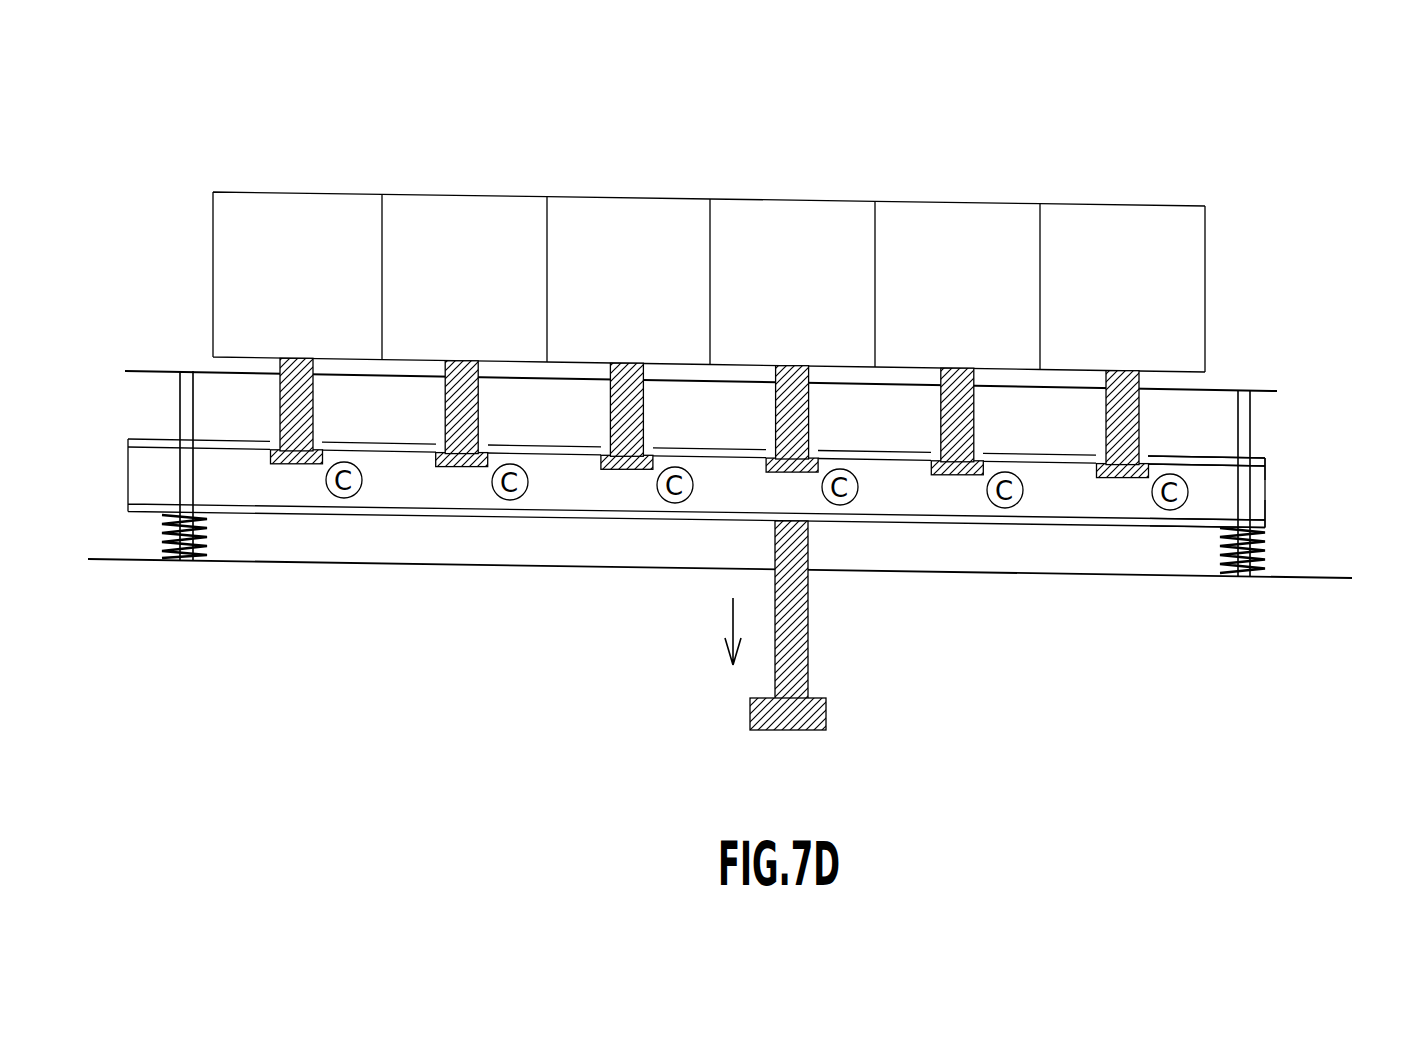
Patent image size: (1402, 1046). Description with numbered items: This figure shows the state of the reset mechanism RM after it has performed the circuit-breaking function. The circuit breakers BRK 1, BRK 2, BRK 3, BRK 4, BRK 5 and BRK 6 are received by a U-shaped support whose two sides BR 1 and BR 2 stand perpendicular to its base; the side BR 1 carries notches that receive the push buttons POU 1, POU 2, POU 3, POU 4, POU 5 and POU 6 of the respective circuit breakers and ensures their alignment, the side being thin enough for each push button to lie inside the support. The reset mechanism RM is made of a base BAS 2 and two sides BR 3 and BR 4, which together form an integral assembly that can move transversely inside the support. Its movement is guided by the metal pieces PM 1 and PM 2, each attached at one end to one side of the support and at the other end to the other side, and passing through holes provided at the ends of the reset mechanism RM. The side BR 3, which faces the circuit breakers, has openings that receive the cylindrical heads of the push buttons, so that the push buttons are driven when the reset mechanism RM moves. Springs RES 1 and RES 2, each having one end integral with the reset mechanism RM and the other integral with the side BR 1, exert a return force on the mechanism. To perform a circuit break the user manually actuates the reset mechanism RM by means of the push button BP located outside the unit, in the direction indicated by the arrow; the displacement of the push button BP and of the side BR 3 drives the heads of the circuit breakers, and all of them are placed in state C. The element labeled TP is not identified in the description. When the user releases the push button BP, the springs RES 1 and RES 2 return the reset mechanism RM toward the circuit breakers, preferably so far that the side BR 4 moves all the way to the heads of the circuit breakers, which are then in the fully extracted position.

The push button POU 1 is at (280, 358).
The push button POU 2 is at (475, 360).
The push button POU 3 is at (640, 368).
The push button POU 4 is at (795, 367).
The push button POU 5 is at (957, 370).
The push button POU 6 is at (1130, 372).
The circuit breaker BRK 1 is at (313, 232).
The circuit breaker BRK 2 is at (467, 232).
The circuit breaker BRK 3 is at (633, 238).
The circuit breaker BRK 4 is at (798, 238).
The circuit breaker BRK 5 is at (955, 232).
The circuit breaker BRK 6 is at (1117, 232).
The reset mechanism RM is at (1182, 468).
The side of the support BR 1 is at (1228, 388).
The side of the support BR 2 is at (1095, 577).
The side of the reset mechanism BR 3 is at (1223, 447).
The side of the reset mechanism BR 4 is at (1197, 530).
The metal piece PM 1 is at (175, 412).
The metal piece PM 2 is at (1245, 412).
The base of the reset mechanism BAS 2 is at (1222, 497).
The spring RES 1 is at (192, 545).
The spring RES 2 is at (1258, 552).
The press rod TP is at (810, 613).
The push button BP is at (827, 717).